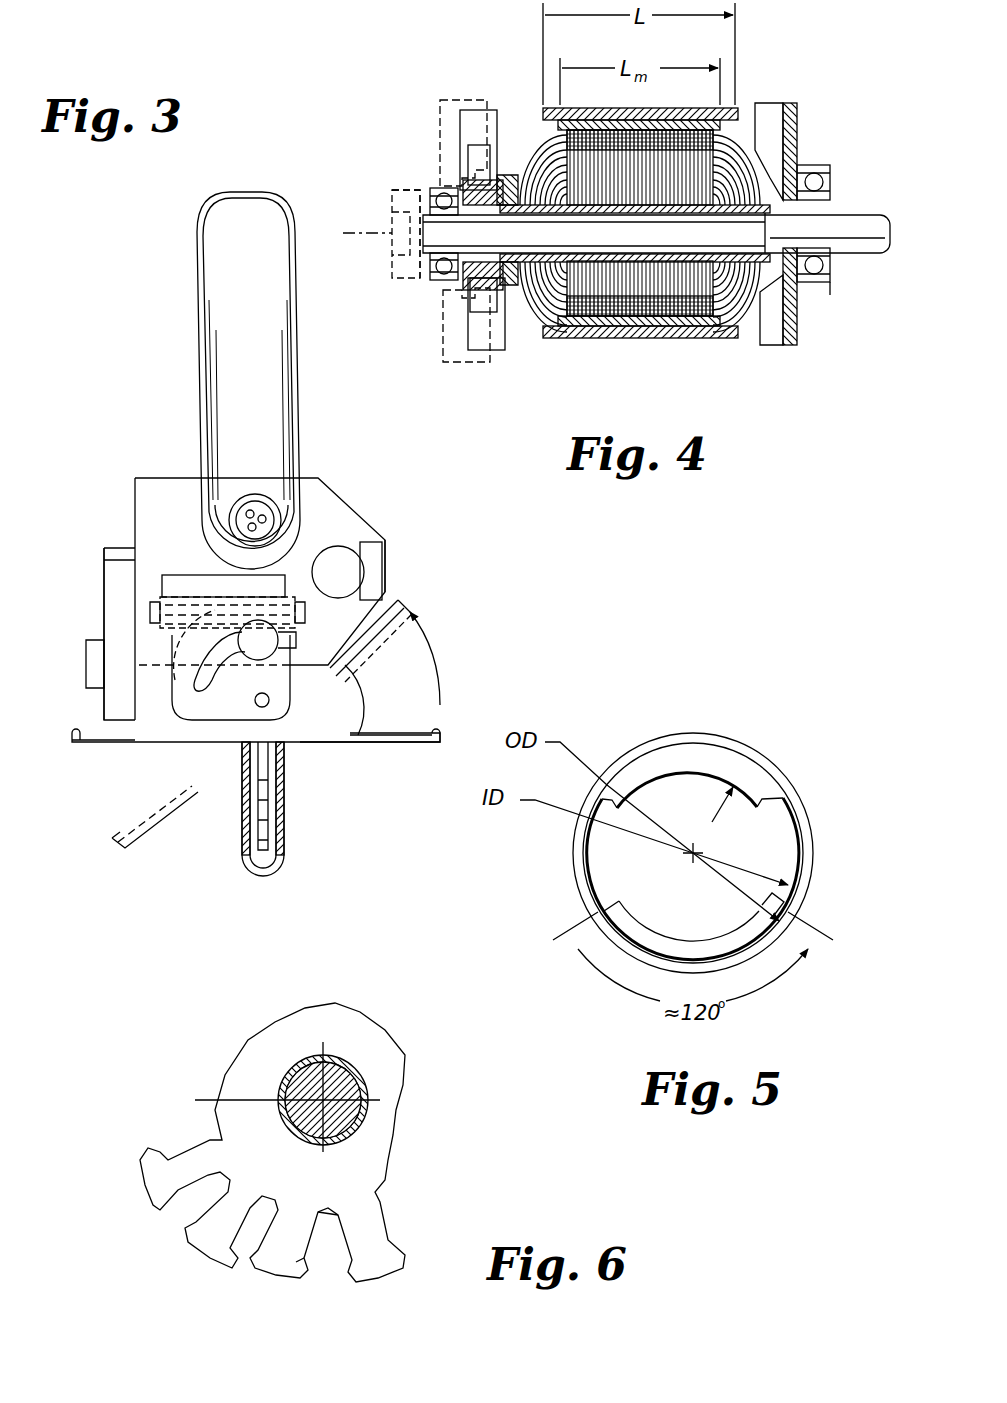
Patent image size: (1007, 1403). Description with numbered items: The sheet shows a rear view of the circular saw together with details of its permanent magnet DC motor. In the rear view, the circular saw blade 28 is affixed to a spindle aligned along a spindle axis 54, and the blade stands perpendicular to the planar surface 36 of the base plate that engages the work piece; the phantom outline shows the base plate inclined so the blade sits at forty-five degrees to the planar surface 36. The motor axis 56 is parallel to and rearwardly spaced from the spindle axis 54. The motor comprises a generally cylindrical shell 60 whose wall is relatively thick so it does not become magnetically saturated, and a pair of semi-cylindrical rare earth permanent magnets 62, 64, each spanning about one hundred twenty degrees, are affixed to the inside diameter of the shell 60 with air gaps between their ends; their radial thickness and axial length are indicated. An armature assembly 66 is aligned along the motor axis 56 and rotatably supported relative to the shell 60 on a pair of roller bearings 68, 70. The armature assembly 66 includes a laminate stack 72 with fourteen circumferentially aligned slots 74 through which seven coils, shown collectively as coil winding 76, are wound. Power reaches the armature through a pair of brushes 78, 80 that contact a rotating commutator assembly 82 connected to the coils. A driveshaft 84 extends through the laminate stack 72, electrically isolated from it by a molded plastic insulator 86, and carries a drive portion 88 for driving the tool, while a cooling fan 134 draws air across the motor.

In FIG. 3, the circular saw blade 28 is at (268, 840).
In FIG. 3, the planar surface 36 is at (358, 745).
In FIG. 3, the spindle axis 54 is at (72, 663).
In FIG. 3, the motor axis 56 is at (440, 570).
In FIG. 4, the motor axis 56 is at (372, 215).
In FIG. 4, the cylindrical shell 60 is at (735, 148).
In FIG. 5, the cylindrical shell 60 is at (787, 781).
In FIG. 5, the permanent magnet 62 is at (772, 800).
In FIG. 5, the permanent magnet 64 is at (777, 901).
In FIG. 4, the armature assembly 66 is at (760, 135).
In FIG. 4, the roller bearing 68 is at (830, 282).
In FIG. 4, the roller bearing 70 is at (435, 275).
In FIG. 4, the laminate stack 72 is at (715, 312).
In FIG. 6, the laminate stack 72 is at (380, 1138).
In FIG. 6, the slots 74 is at (275, 1238).
In FIG. 4, the coil winding 76 is at (548, 300).
In FIG. 4, the brush 78 is at (465, 350).
In FIG. 4, the brush 80 is at (465, 110).
In FIG. 4, the commutator assembly 82 is at (515, 175).
In FIG. 4, the driveshaft 84 is at (845, 205).
In FIG. 6, the molded plastic insulator 86 is at (373, 1088).
In FIG. 4, the drive portion 88 is at (880, 255).
In FIG. 4, the cooling fan 134 is at (792, 345).